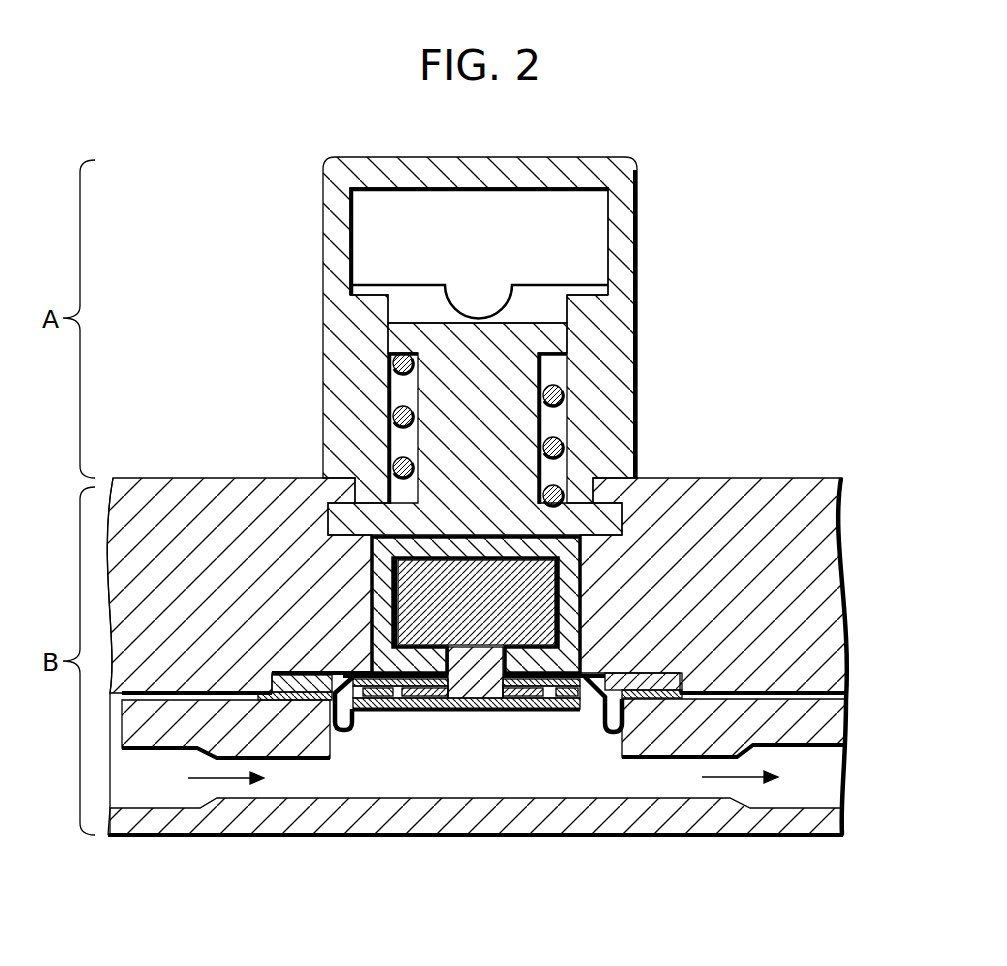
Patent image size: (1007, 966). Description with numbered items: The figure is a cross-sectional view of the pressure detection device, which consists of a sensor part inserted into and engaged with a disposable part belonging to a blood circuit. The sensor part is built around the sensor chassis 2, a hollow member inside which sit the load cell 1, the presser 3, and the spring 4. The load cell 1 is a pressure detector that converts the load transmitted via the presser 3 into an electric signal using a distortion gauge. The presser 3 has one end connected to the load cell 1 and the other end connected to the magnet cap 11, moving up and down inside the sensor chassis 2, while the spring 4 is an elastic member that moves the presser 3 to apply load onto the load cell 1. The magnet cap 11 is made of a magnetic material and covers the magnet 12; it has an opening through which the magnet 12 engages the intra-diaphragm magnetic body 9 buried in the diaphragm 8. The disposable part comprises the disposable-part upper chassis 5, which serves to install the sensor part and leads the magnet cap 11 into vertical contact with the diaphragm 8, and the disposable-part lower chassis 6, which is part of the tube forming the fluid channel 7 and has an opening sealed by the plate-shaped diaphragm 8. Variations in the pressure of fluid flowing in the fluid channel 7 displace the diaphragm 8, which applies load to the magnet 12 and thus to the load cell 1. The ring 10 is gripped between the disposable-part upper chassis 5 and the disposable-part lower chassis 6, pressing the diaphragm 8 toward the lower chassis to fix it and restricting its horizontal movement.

The load cell 1 is at (507, 240).
The sensor chassis 2 is at (352, 430).
The presser 3 is at (502, 347).
The spring 4 is at (560, 437).
The disposable-part upper chassis 5 is at (795, 611).
The disposable-part lower chassis 6 is at (793, 727).
The fluid channel 7 is at (213, 780).
The diaphragm 8 is at (490, 712).
The intra-diaphragm magnetic body 9 is at (468, 665).
The ring 10 is at (657, 672).
The magnet cap 11 is at (382, 607).
The magnet 12 is at (578, 727).